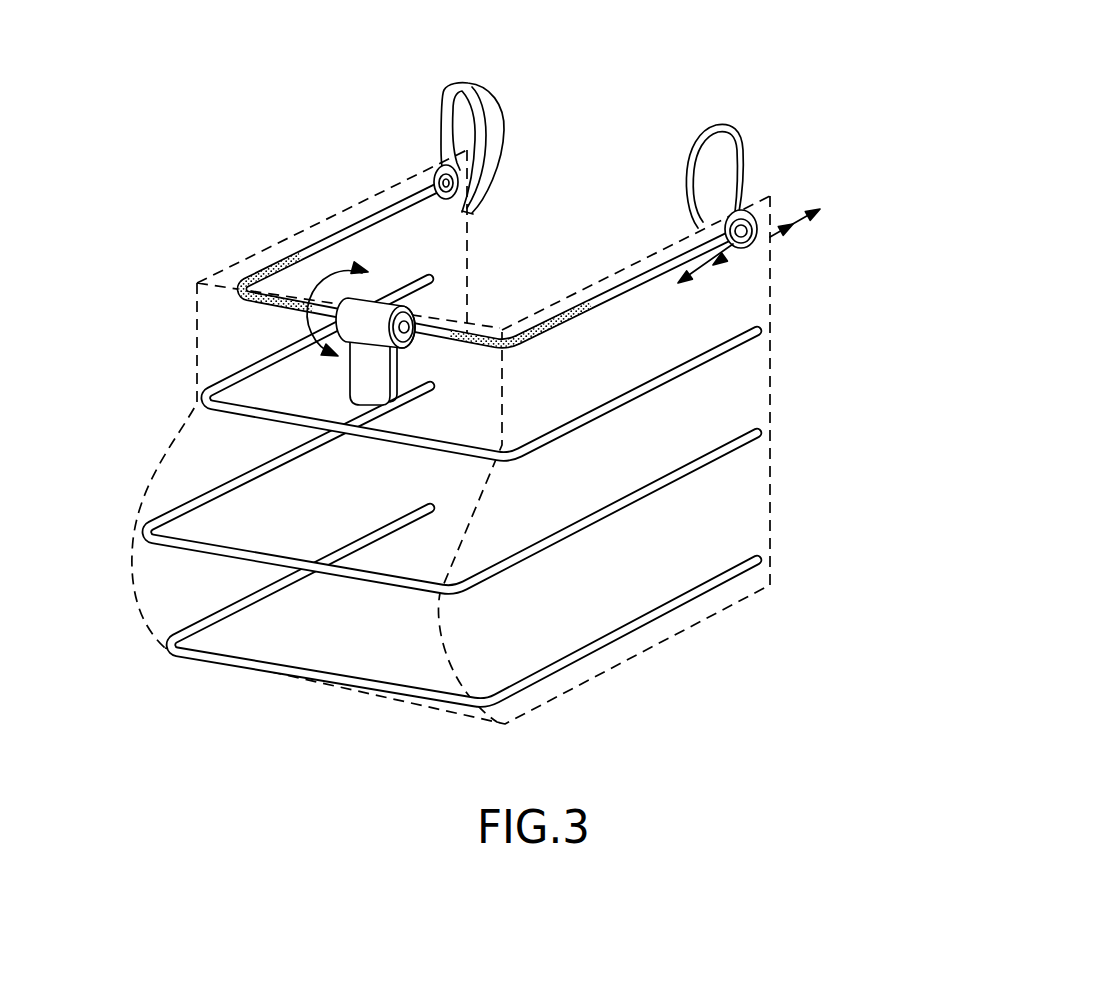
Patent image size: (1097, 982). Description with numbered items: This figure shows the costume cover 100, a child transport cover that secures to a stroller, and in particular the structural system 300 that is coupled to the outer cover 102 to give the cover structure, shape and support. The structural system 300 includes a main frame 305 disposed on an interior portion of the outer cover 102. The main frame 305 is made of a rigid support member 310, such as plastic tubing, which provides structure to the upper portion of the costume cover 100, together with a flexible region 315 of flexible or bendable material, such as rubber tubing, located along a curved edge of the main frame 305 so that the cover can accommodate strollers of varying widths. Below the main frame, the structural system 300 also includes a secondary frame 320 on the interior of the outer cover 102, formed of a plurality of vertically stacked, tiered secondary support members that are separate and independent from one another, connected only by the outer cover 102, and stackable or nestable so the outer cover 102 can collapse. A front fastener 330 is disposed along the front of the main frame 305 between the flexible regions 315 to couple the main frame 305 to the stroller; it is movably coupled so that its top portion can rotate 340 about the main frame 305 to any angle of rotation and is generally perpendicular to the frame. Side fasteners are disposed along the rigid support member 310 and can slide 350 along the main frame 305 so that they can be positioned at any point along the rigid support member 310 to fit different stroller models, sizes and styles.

The costume cover 100 is at (497, 368).
The outer cover 102 is at (152, 481).
The structural system 300 is at (522, 357).
The main frame 305 is at (758, 190).
The rigid support member 310 is at (370, 222).
The flexible region 315 is at (287, 263).
The secondary frame 320 is at (496, 491).
The front fastener 330 is at (370, 375).
The rotate 340 is at (300, 335).
The slide 350 is at (778, 237).